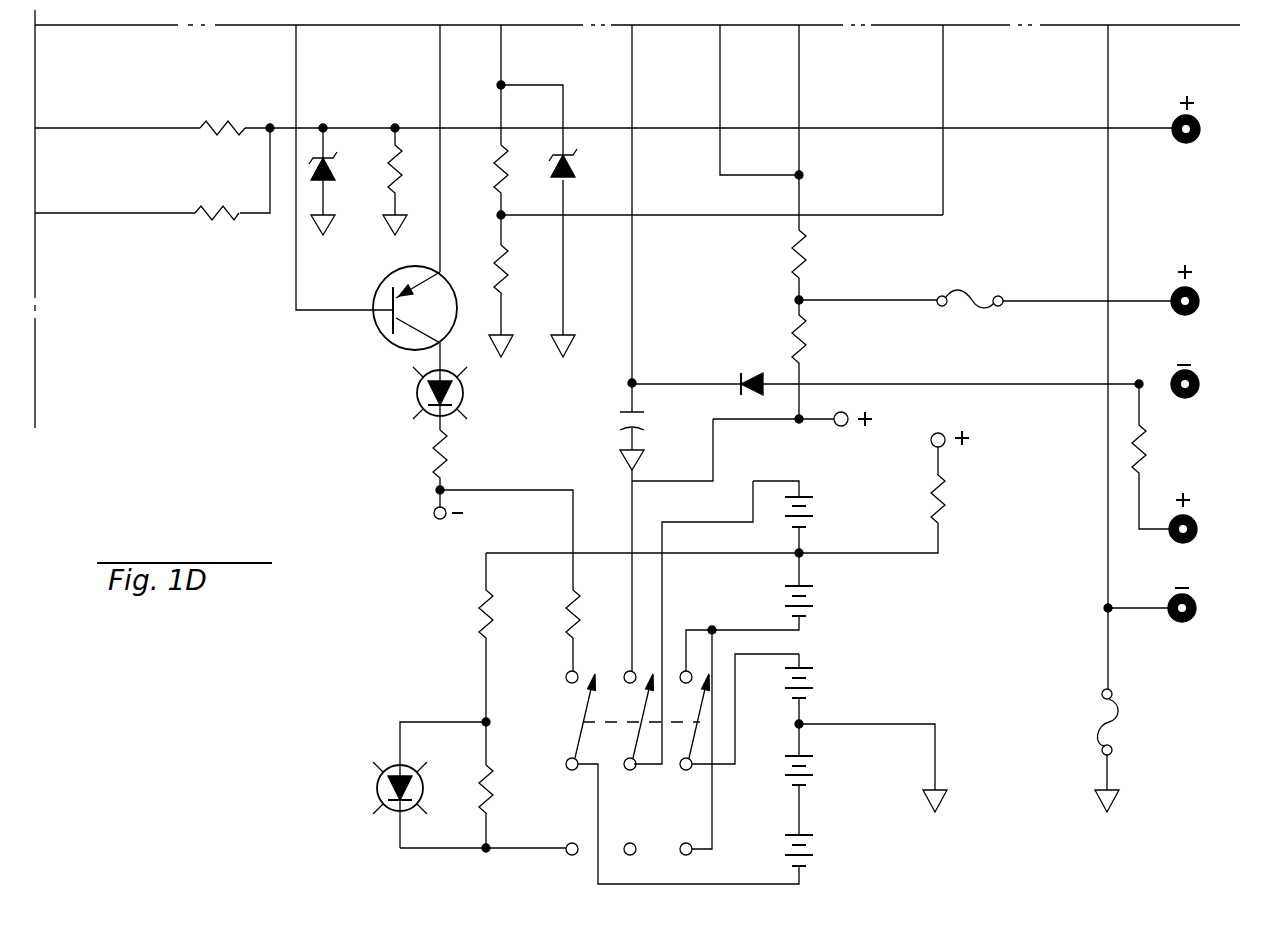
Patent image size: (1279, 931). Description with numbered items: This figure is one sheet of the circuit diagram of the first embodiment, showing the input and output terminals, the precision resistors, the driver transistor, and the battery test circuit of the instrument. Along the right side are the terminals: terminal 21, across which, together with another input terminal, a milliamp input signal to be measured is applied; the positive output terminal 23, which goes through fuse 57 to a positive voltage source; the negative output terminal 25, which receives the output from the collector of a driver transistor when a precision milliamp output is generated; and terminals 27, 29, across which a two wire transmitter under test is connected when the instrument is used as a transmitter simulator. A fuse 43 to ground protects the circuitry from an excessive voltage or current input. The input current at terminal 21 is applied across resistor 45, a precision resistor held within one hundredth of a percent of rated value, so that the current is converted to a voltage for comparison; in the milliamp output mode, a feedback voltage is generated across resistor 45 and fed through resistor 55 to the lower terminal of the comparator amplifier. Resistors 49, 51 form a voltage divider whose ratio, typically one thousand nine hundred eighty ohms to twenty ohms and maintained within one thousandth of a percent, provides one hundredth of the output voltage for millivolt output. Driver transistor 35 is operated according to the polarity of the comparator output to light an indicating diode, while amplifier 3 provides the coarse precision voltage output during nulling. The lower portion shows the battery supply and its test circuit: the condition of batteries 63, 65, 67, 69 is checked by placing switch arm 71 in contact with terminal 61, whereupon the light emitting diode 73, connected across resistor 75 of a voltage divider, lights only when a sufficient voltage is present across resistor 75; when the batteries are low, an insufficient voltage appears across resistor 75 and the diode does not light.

The amplifier 3 is at (463, 393).
The terminal 21 is at (1201, 131).
The positive output terminal 23 is at (1200, 301).
The negative output terminal 25 is at (1200, 384).
The terminal 27 is at (1198, 529).
The terminal 29 is at (1198, 608).
The driver transistor 35 is at (380, 338).
The fuse 43 is at (1112, 722).
The resistor 45 is at (396, 168).
The resistor 49 is at (500, 168).
The resistor 51 is at (500, 270).
The resistor 55 is at (222, 232).
The fuse 57 is at (966, 297).
The terminal 61 is at (810, 498).
The battery 63 is at (812, 588).
The battery 65 is at (812, 668).
The battery 67 is at (812, 757).
The battery 69 is at (812, 835).
The switch arm 71 is at (580, 728).
The diode 73 is at (378, 790).
The resistor 75 is at (490, 785).